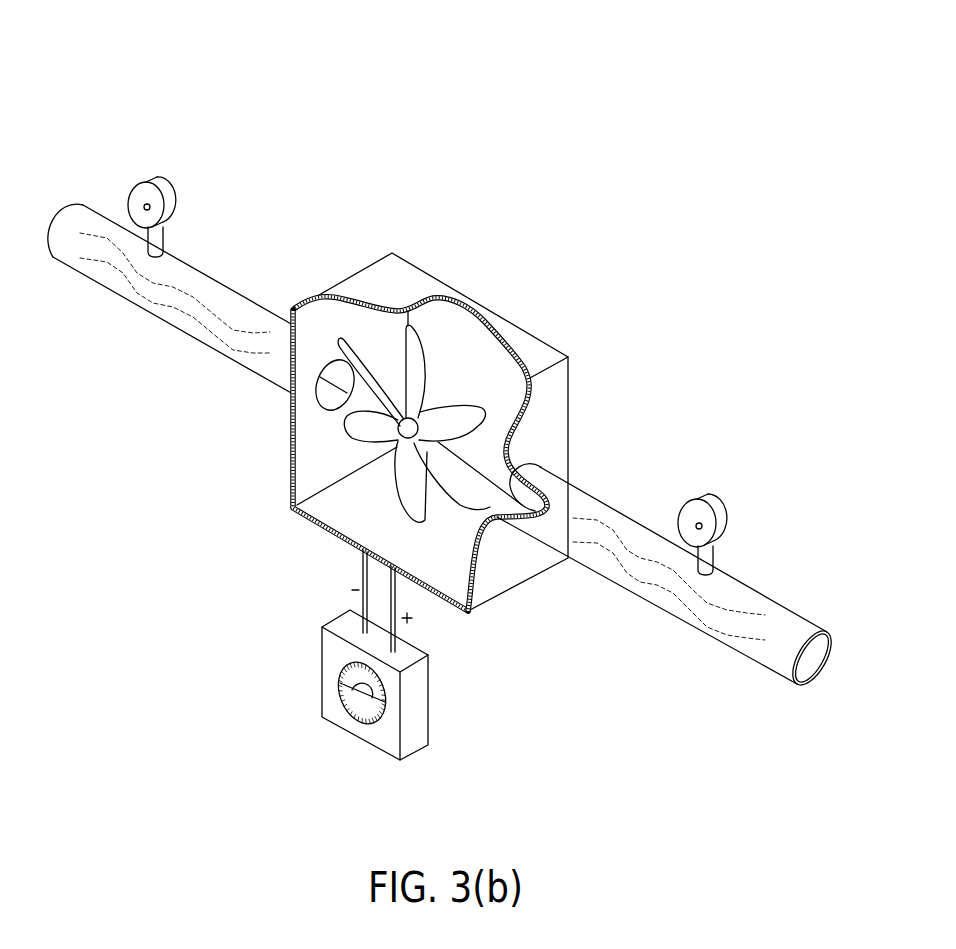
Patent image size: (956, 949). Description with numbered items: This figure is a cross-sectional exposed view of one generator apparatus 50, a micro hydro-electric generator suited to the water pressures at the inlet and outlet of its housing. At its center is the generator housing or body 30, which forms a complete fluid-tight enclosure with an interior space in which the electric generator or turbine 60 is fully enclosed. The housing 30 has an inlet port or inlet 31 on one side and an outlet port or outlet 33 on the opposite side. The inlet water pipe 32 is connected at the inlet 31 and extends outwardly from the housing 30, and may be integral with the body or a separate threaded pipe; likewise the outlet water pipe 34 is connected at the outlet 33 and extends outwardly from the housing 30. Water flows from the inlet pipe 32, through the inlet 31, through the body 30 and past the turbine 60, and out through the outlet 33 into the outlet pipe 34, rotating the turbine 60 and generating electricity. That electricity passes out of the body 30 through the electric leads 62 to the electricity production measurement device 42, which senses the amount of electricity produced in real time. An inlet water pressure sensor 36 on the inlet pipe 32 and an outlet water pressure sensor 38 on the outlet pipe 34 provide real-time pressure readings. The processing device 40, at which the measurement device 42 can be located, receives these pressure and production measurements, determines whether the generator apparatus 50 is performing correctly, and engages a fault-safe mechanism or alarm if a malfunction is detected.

The generator apparatus 50 is at (104, 52).
The generator housing 30 is at (490, 308).
The inlet port 31 is at (333, 364).
The inlet water pipe 32 is at (142, 318).
The outlet port 33 is at (544, 500).
The outlet water pipe 34 is at (678, 620).
The inlet water pressure sensor 36 is at (161, 174).
The outlet water pressure sensor 38 is at (712, 491).
The processing device 40 is at (338, 728).
The electricity production sensor 42 is at (331, 683).
The turbine 60 is at (378, 332).
The electric leads 62 is at (407, 588).